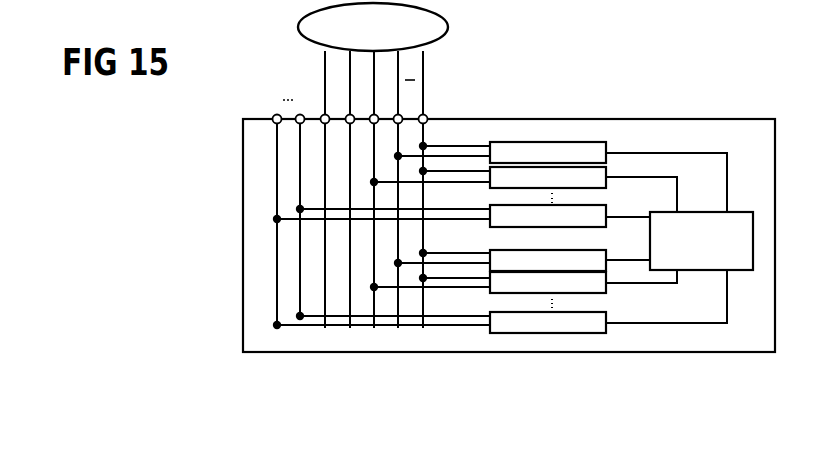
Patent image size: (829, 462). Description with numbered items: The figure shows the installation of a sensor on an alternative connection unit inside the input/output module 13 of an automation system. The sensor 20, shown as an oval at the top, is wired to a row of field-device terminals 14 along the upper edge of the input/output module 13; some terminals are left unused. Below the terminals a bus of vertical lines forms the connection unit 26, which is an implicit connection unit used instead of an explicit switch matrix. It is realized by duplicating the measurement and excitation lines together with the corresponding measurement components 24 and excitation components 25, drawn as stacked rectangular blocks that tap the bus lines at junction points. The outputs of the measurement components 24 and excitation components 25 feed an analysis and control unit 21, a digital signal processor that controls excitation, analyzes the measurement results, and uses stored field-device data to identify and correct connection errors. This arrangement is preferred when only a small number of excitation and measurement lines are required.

The input/output module 13 is at (647, 118).
The field-device terminals 14 is at (349, 113).
The sensor 20 is at (448, 28).
The analysis and control unit 21 is at (745, 211).
The measurement components 24 is at (507, 215).
The excitation components 25 is at (528, 320).
The connection unit 26 is at (357, 332).